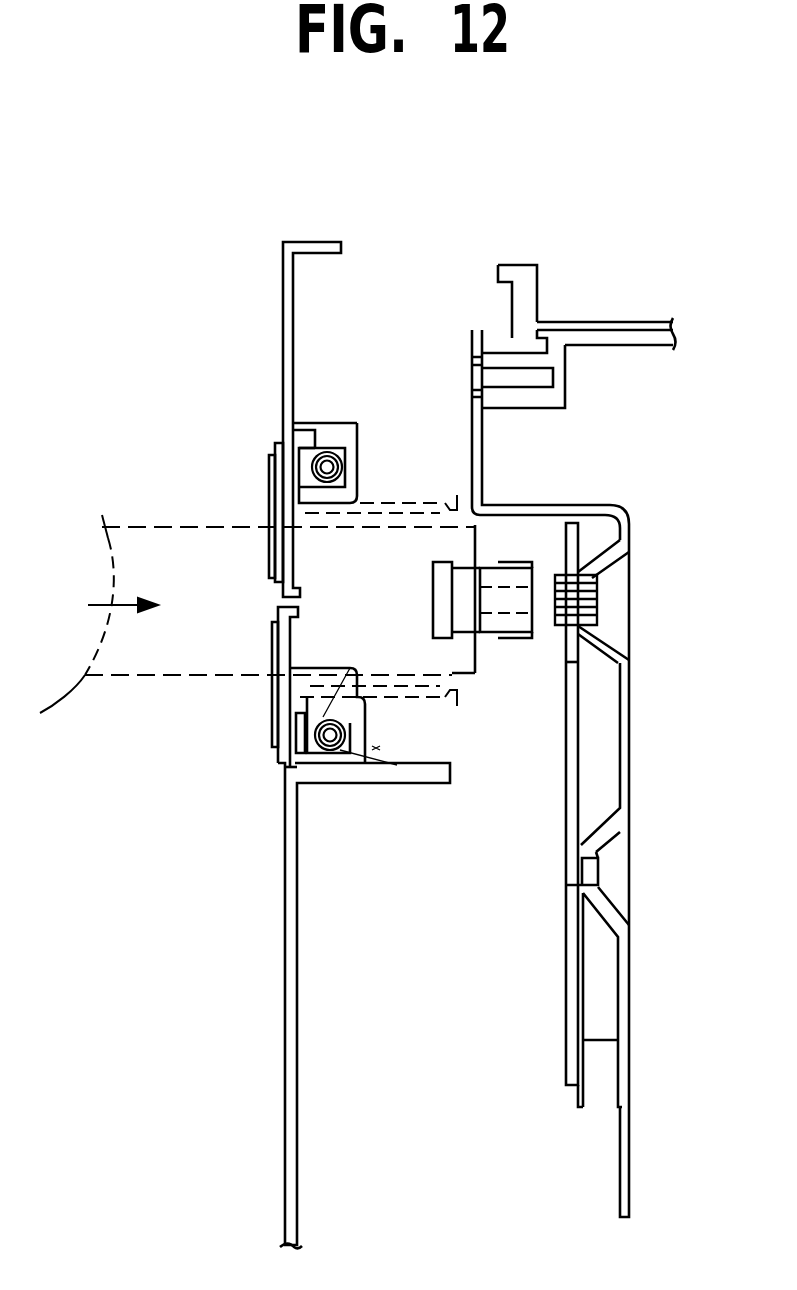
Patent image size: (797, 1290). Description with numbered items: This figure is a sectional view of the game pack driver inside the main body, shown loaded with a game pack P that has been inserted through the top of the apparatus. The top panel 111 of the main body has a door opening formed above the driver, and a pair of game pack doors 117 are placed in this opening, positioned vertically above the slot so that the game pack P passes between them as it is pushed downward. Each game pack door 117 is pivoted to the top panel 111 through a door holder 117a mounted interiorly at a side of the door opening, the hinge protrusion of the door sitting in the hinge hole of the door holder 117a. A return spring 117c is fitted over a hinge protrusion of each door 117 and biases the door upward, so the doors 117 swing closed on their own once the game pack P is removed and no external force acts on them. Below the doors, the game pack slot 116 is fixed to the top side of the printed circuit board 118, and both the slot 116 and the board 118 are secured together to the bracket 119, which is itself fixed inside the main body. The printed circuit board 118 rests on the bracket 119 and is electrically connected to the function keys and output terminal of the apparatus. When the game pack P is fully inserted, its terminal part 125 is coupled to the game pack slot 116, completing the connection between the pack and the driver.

The top panel 111 is at (285, 937).
The game pack door 117 is at (273, 500).
The door holder 117a is at (320, 425).
The return spring 117c is at (333, 455).
The bracket 119 is at (598, 505).
The game pack slot 116 is at (547, 612).
The terminal part 125 is at (507, 616).
The printed circuit board 118 is at (575, 745).
The game pack P is at (173, 660).